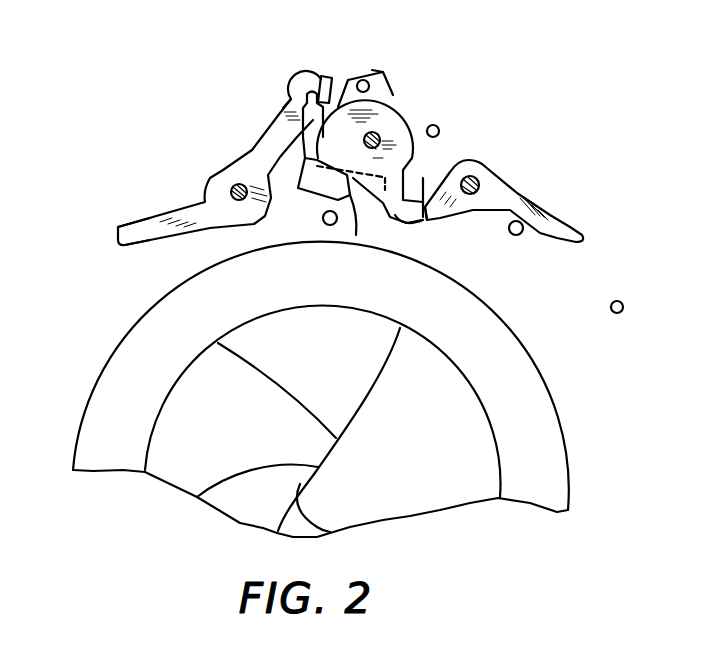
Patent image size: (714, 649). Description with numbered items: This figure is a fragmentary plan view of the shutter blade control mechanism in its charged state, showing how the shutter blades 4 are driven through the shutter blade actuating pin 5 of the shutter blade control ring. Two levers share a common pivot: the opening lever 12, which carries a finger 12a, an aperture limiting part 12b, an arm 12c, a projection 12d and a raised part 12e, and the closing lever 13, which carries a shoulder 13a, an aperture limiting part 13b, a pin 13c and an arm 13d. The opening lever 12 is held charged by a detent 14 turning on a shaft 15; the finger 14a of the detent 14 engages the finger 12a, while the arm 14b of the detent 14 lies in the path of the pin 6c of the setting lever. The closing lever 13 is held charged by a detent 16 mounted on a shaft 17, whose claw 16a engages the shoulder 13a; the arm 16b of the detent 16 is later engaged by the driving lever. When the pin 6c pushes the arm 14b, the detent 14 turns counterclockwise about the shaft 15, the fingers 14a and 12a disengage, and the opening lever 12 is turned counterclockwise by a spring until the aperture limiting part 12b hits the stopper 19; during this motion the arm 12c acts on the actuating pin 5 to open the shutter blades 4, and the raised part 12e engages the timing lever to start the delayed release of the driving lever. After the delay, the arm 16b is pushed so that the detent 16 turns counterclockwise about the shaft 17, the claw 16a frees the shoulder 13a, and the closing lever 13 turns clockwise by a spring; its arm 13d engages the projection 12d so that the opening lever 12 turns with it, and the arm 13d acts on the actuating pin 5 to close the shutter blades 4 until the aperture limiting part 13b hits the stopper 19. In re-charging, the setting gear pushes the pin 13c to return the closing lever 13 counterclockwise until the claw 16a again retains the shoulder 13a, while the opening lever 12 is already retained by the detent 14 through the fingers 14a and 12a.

The shutter blades 4 is at (423, 461).
The shutter blade actuating pin 5 is at (328, 222).
The pin 6c is at (623, 299).
The opening lever 12 is at (392, 127).
The finger 12a is at (389, 219).
The aperture limiting part 12b is at (405, 193).
The arm 12c is at (310, 198).
The projection 12d is at (348, 195).
The raised part 12e is at (313, 122).
The closing lever 13 is at (381, 75).
The shoulder 13a is at (295, 103).
The aperture limiting part 13b is at (390, 86).
The pin 13c is at (378, 85).
The arm 13d is at (397, 224).
The detent 14 is at (556, 214).
The finger 14a is at (440, 228).
The arm 14b is at (560, 244).
The shaft 15 is at (480, 186).
The detent 16 is at (253, 147).
The claw 16a is at (324, 76).
The arm 16b is at (128, 230).
The shaft 17 is at (231, 187).
The stopper 19 is at (440, 131).